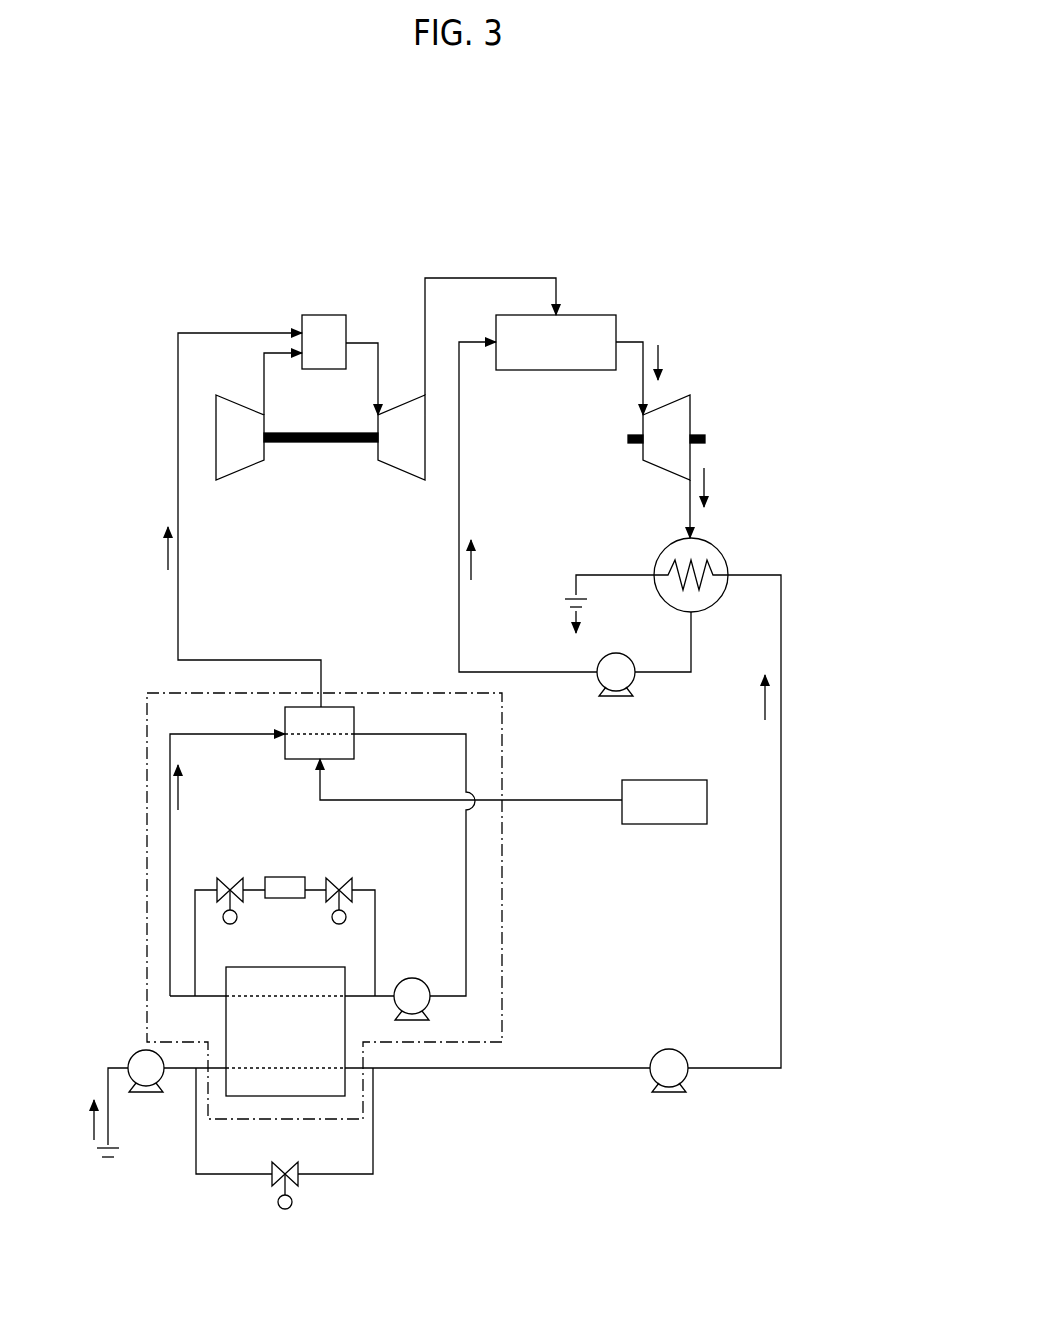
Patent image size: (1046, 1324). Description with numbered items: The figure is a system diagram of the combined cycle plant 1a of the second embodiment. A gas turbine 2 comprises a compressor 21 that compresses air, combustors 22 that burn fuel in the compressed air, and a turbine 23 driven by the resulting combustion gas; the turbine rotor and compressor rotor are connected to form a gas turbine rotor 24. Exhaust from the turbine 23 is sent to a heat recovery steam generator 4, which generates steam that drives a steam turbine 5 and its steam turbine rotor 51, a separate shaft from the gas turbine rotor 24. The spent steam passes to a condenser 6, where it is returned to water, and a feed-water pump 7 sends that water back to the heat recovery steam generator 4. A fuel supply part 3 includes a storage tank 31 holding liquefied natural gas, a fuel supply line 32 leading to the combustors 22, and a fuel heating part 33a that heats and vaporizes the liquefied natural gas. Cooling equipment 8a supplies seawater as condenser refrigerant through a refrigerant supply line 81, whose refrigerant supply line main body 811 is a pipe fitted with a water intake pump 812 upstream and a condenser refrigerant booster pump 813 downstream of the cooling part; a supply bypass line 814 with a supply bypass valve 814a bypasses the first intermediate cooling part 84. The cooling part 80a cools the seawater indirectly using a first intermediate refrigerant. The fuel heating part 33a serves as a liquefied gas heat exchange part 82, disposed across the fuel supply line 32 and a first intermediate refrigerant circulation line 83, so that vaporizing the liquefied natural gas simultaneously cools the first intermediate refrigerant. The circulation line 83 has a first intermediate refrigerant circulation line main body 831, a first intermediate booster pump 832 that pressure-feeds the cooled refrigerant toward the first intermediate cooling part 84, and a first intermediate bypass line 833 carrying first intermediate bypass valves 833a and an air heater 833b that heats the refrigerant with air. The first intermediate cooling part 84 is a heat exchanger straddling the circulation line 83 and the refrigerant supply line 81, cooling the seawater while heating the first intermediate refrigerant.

The combined cycle plant 1a is at (690, 270).
The gas turbine 2 is at (362, 296).
The compressor 21 is at (240, 467).
The combustors 22 is at (318, 316).
The turbine 23 is at (400, 467).
The gas turbine rotor 24 is at (318, 445).
The fuel supply line 32 is at (180, 605).
The heat recovery steam generator 4 is at (592, 326).
The steam turbine 5 is at (696, 410).
The steam turbine rotor 51 is at (632, 446).
The condenser 6 is at (708, 550).
The feed-water pump 7 is at (628, 678).
The fuel supply part 3 is at (580, 797).
The storage tank 31 is at (668, 788).
The fuel heating part 33a is at (334, 705).
The liquefied gas heat exchange part 82 is at (363, 675).
The cooling part 80a is at (145, 770).
The refrigerant supply line 81 is at (783, 800).
The refrigerant supply line main body 811 is at (505, 1072).
The water intake pump 812 is at (152, 1092).
The condenser refrigerant booster pump 813 is at (688, 1080).
The supply bypass line 814 is at (330, 1186).
The supply bypass valve 814a is at (270, 1185).
The cooling equipment 8a is at (589, 1088).
The first intermediate refrigerant circulation line 83 is at (464, 833).
The first intermediate refrigerant circulation line main body 831 is at (464, 868).
The first intermediate booster pump 832 is at (418, 978).
The first intermediate bypass line 833 is at (378, 912).
The first intermediate bypass valves 833a is at (231, 878).
The air heater 833b is at (286, 882).
The first intermediate cooling part 84 is at (224, 1023).